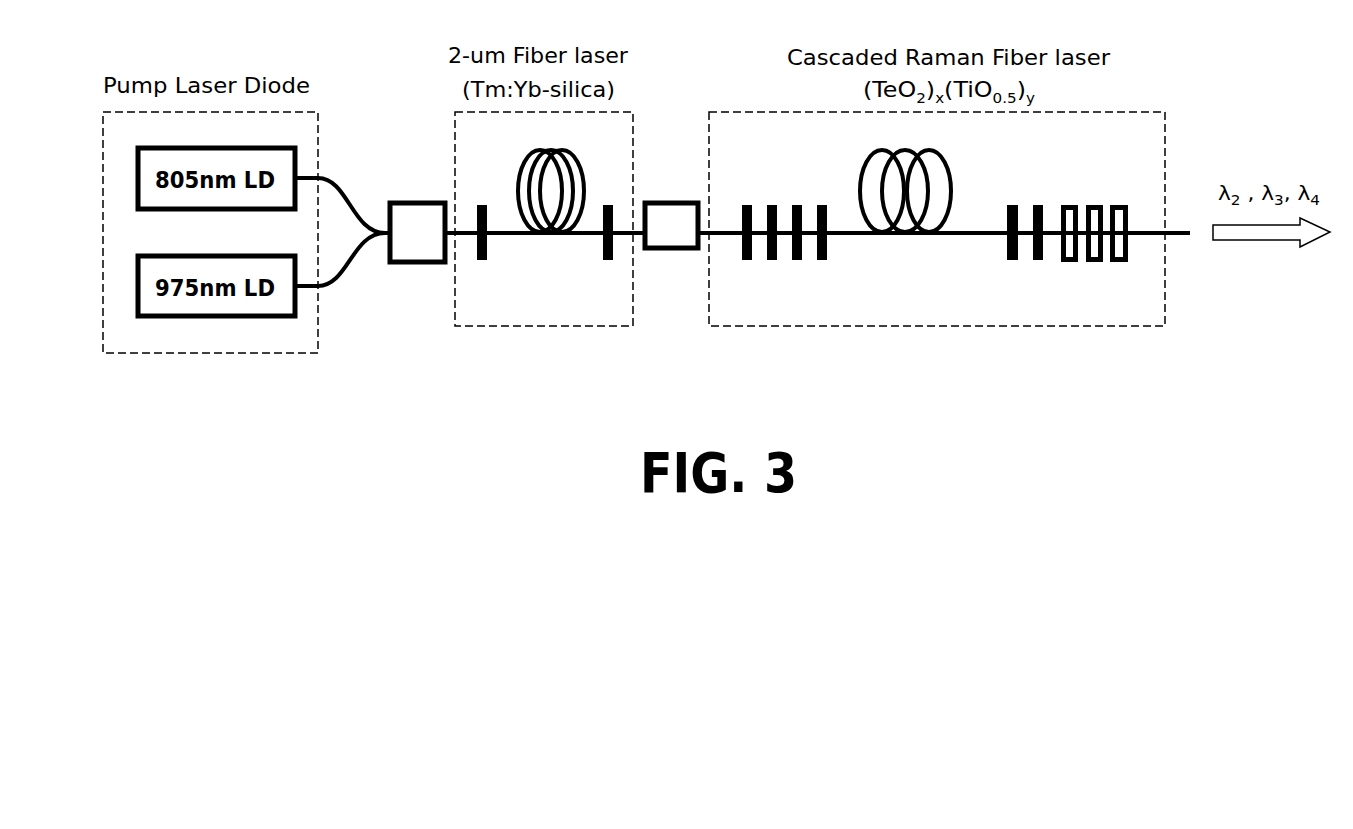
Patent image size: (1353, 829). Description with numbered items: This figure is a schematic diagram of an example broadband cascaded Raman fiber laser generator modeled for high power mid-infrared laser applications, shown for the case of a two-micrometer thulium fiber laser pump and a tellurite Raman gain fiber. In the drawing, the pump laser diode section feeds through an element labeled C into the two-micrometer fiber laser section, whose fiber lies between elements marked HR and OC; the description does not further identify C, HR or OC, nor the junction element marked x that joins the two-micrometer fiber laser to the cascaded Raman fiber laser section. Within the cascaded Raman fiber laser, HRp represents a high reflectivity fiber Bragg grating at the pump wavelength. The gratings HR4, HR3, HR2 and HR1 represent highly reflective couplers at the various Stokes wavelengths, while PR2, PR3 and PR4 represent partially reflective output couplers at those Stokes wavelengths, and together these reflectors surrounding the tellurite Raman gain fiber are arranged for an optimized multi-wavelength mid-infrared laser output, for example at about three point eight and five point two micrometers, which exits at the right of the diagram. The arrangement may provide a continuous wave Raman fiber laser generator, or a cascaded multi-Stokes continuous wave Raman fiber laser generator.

The pump combiner C is at (417, 232).
The splice / connector x is at (671, 226).
The high reflector of 2-um fiber laser HR is at (484, 249).
The output coupler of 2-um fiber laser OC is at (601, 249).
The highly reflective output coupler HR4 is at (743, 218).
The highly reflective output coupler HR3 is at (770, 249).
The highly reflective output coupler HR2 is at (795, 218).
The highly reflective output coupler HR1 is at (935, 249).
The high reflectivity FBG at the pump wavelength HRp is at (997, 218).
The partially reflective output coupler PR2 is at (1060, 218).
The partially reflective output coupler PR3 is at (1099, 251).
The partially reflective output coupler PR4 is at (1124, 218).